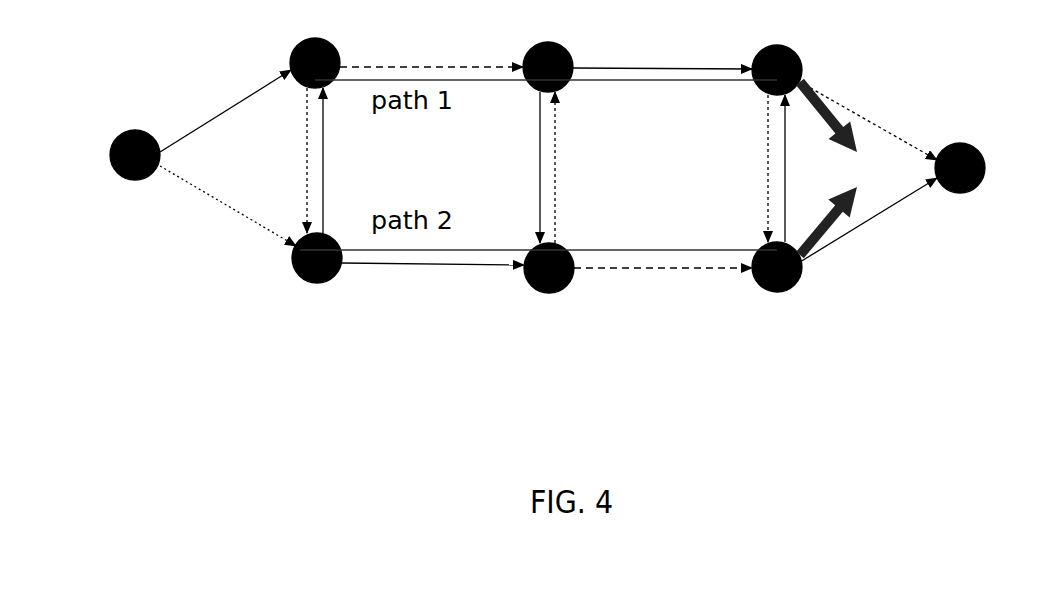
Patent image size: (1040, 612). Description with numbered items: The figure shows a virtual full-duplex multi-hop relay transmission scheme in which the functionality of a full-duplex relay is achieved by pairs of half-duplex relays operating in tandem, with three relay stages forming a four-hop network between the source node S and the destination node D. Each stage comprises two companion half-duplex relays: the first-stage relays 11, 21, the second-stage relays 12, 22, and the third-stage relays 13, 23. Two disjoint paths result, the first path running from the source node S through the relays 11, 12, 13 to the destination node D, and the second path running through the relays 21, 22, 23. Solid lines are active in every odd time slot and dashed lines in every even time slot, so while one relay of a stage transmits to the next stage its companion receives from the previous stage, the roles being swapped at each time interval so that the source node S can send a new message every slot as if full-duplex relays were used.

The source node S is at (115, 156).
The destination node D is at (985, 168).
The half-duplex relay R1,1 11 is at (315, 44).
The half-duplex relay R1,2 12 is at (550, 46).
The half-duplex relay R1,3 13 is at (777, 47).
The half-duplex relay R2,1 21 is at (319, 283).
The half-duplex relay R2,2 22 is at (550, 288).
The half-duplex relay R2,3 23 is at (777, 289).